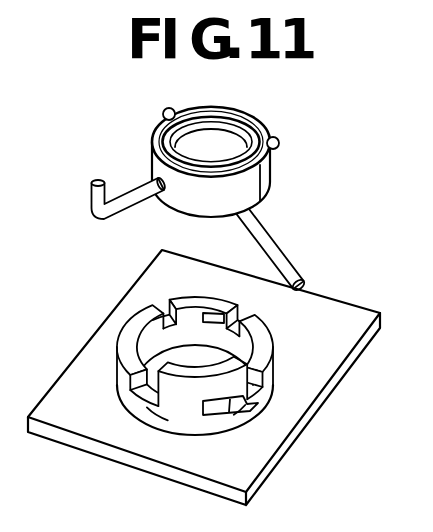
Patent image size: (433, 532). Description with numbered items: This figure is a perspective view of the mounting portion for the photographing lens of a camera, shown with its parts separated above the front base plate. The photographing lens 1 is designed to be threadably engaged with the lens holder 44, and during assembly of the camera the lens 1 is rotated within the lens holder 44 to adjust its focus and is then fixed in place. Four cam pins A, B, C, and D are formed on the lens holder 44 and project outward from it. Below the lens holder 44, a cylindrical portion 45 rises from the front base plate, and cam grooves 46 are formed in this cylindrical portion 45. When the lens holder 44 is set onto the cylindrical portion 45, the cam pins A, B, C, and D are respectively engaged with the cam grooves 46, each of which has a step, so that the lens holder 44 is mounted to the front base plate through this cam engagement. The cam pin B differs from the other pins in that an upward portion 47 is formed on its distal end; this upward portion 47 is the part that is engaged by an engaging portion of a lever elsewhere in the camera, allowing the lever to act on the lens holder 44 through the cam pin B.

The photographing lens 1 is at (223, 143).
The lens holder 44 is at (256, 181).
The cylindrical portion 45 is at (256, 381).
The cam groove 46 is at (243, 405).
The upward portion 47 is at (89, 198).
The cam pin A is at (248, 233).
The cam pin B is at (94, 214).
The cam pin C is at (163, 112).
The cam pin D is at (280, 142).